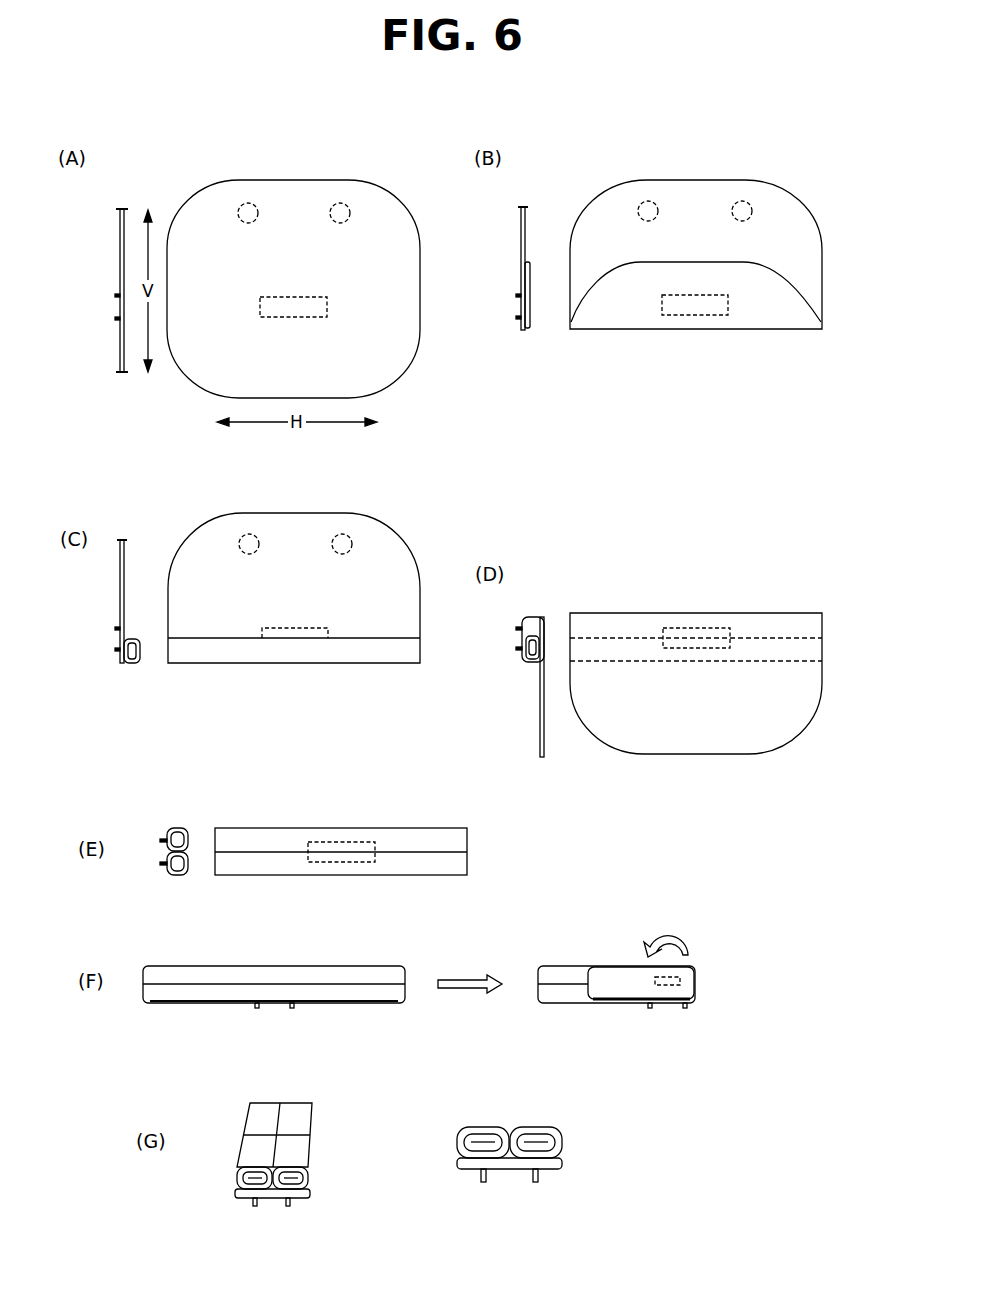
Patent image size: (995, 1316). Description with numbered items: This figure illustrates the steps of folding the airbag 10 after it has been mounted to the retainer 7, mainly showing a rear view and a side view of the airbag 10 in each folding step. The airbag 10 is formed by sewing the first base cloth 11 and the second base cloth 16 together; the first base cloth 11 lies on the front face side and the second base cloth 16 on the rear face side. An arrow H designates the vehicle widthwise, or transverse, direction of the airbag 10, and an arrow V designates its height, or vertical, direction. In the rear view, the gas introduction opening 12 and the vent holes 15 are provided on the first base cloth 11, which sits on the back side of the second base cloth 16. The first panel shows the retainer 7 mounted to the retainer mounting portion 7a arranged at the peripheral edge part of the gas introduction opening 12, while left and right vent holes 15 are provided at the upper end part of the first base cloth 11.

The airbag 10 is at (482, 562).
The first base cloth 11 is at (762, 318).
The gas introduction opening 12 is at (312, 302).
The vent hole 15 is at (243, 205).
The second base cloth 16 is at (368, 365).
The retainer 7 is at (118, 319).
The retainer mounting portion 7a is at (116, 299).